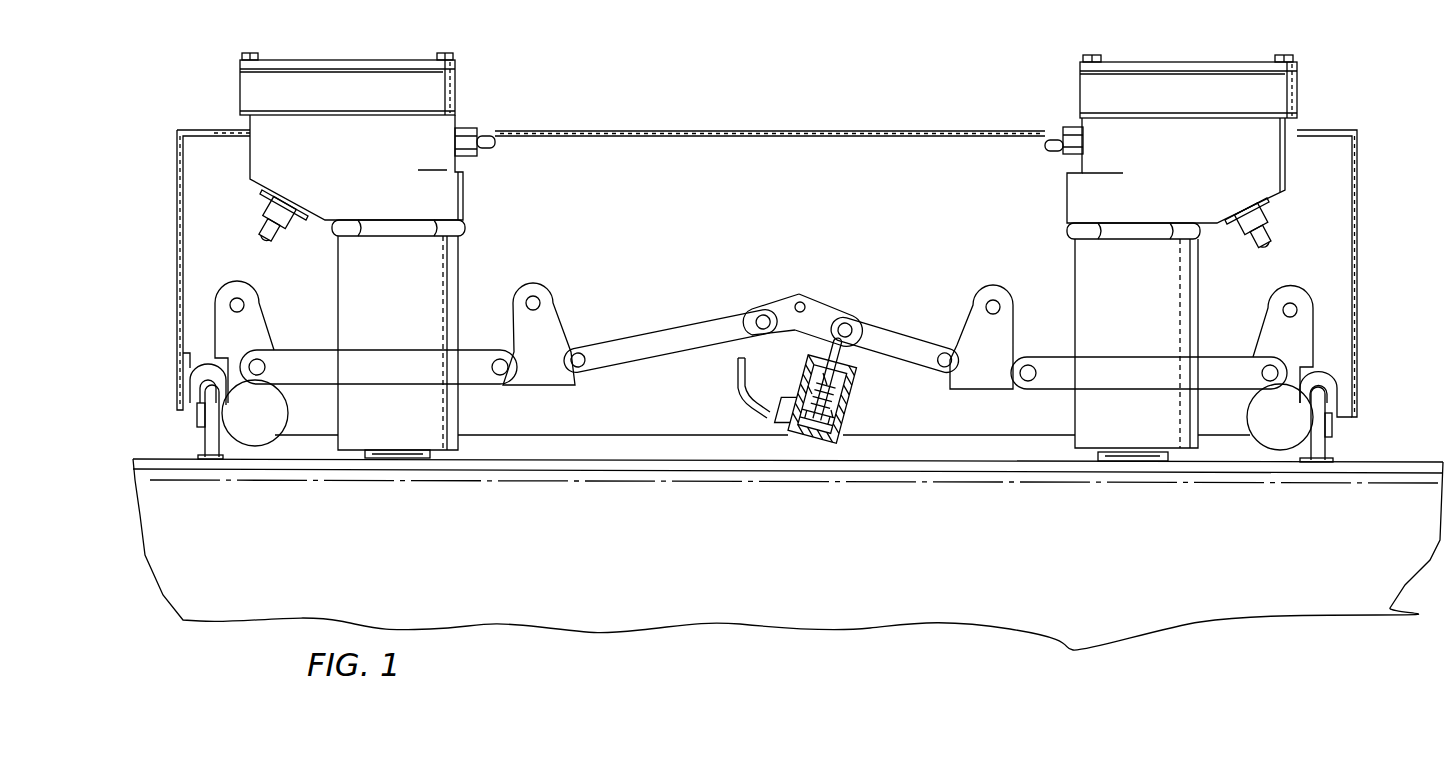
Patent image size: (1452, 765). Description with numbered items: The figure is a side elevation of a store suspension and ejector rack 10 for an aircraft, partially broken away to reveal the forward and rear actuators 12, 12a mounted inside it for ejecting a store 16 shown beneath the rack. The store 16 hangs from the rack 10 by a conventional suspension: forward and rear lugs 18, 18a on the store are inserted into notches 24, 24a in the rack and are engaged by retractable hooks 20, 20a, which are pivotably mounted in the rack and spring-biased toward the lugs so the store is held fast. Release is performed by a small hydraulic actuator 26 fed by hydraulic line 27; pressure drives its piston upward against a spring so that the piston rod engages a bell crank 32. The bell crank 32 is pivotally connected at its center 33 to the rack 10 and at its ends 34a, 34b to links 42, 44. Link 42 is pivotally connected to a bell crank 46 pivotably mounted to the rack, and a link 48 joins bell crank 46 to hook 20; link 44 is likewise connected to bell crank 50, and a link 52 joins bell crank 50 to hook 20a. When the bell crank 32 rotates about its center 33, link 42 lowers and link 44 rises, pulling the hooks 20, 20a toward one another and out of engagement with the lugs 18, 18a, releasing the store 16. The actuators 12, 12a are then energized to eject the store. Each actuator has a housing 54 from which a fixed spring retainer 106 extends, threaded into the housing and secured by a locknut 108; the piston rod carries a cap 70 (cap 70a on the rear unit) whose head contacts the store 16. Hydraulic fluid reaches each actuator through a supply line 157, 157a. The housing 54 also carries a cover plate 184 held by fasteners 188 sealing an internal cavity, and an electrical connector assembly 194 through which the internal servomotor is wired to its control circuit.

The store suspension and ejector rack 10 is at (1333, 126).
The forward actuator 12 is at (373, 259).
The rear actuator 12a is at (1169, 291).
The store 16 is at (788, 554).
The forward lug 18 is at (207, 441).
The rear lug 18a is at (1318, 444).
The retractable hook 20 is at (255, 413).
The retractable hook 20a is at (1280, 417).
The notch 24 is at (196, 370).
The notch 24a is at (1327, 378).
The actuator 26 is at (855, 385).
The hydraulic line 27 is at (732, 388).
The bell crank 32 is at (796, 294).
The center 33 is at (803, 303).
The end 34a is at (767, 308).
The end 34b is at (843, 315).
The link 42 is at (625, 338).
The link 44 is at (897, 334).
The bell crank 46 is at (550, 295).
The link 48 is at (292, 353).
The bell crank 50 is at (1011, 324).
The link 52 is at (1105, 357).
The housing 54 is at (255, 158).
The cap 70 is at (400, 460).
The cap 70a is at (1115, 465).
The fixed spring retainer 106 is at (458, 293).
The locknut 108 is at (465, 230).
The hydraulic fluid supply line 157 is at (490, 140).
The hydraulic fluid supply line 157a is at (1050, 152).
The cover plate 184 is at (338, 62).
The fasteners 188 is at (252, 55).
The electrical connector assembly 194 is at (270, 211).